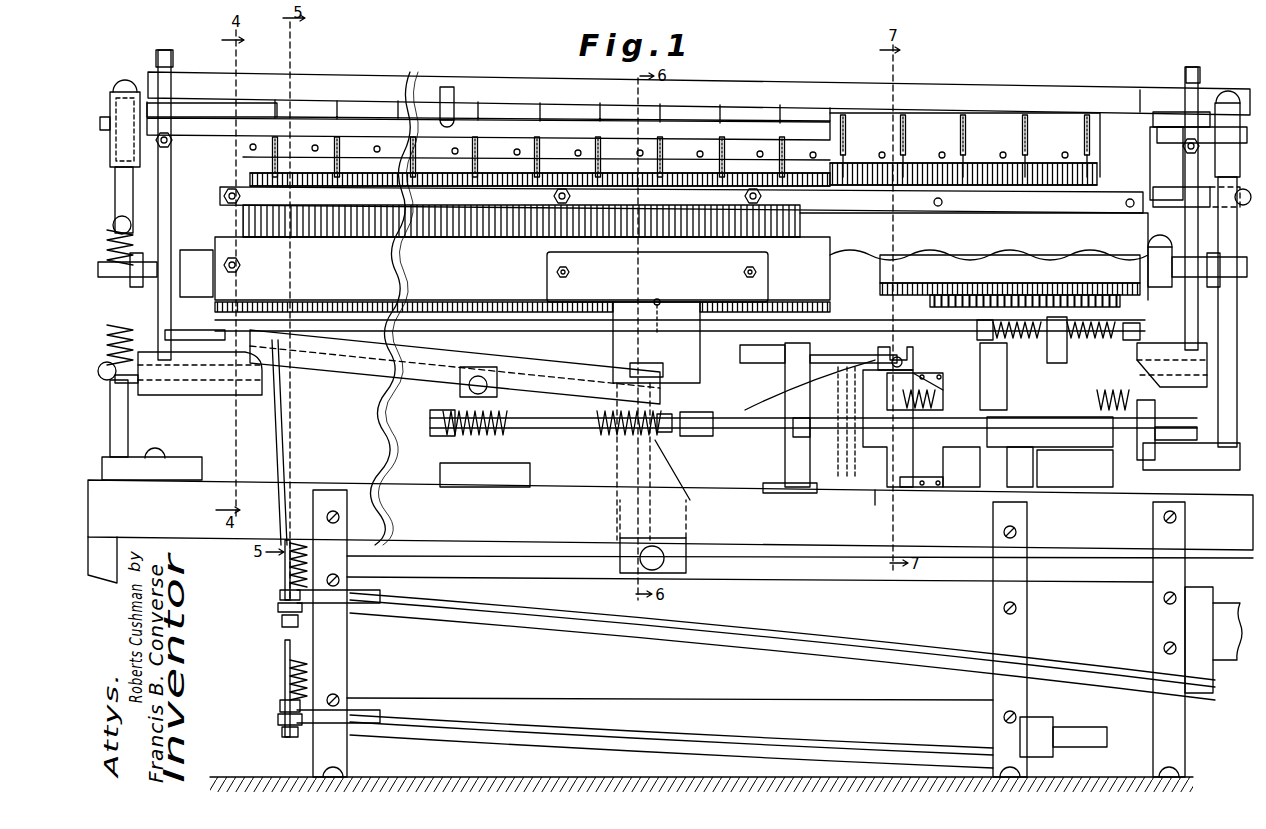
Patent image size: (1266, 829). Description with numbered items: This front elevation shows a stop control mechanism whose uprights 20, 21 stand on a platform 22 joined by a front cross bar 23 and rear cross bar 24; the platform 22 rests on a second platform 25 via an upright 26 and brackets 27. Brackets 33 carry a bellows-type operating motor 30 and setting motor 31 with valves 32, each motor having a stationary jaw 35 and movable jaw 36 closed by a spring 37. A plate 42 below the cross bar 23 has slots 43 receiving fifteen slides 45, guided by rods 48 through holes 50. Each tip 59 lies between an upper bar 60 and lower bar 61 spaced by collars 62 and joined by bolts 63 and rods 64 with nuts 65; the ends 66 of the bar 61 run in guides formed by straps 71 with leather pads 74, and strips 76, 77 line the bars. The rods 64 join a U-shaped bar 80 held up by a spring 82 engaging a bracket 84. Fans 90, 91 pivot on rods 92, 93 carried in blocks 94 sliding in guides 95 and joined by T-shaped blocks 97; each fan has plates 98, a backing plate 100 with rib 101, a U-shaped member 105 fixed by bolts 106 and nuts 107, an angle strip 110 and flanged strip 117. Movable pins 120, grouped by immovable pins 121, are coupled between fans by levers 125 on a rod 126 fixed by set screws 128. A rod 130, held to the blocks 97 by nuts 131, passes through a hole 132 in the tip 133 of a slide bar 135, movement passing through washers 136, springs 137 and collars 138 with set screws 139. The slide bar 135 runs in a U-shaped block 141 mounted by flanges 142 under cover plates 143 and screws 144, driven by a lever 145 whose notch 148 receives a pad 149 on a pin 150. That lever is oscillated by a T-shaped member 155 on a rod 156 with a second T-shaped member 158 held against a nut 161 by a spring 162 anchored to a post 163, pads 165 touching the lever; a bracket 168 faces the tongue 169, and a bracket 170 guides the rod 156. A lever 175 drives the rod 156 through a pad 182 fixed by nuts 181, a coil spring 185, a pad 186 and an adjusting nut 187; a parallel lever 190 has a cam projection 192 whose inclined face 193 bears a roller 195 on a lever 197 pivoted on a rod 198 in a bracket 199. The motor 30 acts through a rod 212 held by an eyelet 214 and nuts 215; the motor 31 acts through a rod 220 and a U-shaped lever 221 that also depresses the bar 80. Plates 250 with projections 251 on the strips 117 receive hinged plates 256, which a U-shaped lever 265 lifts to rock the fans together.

The base 20 is at (128, 440).
The bracket 21 is at (1212, 358).
The frame member 22 is at (871, 506).
The top bar end 23 is at (1120, 95).
The cross block 24 is at (1196, 202).
The floor 25 is at (1060, 777).
The bracket 26 is at (136, 560).
The post 27 is at (1030, 572).
The frame 30 is at (670, 571).
The frame bar 31 is at (822, 723).
The block 32 is at (1035, 715).
The standard 33 is at (345, 553).
The rail 35 is at (782, 674).
The rail strip 36 is at (750, 645).
The spring rod 37 is at (285, 552).
The comb plate 42 is at (1095, 160).
The plate 43 is at (970, 140).
The pin 45 is at (848, 120).
The hole 48 is at (256, 144).
The comb 50 is at (372, 145).
The slide 59 is at (490, 108).
The top bar 60 is at (699, 93).
The rail 61 is at (665, 128).
The bar 62 is at (200, 110).
The bolt 63 is at (450, 85).
The side plate 64 is at (243, 160).
The nut 65 is at (175, 55).
The bolt 66 is at (162, 50).
The post 71 is at (127, 92).
The post rod 74 is at (108, 117).
The divider 76 is at (320, 105).
The pin 77 is at (278, 135).
The bracket 80 is at (672, 373).
The stud 82 is at (176, 382).
The knob 84 is at (128, 390).
The plate 90 is at (522, 268).
The plate 91 is at (1010, 285).
The arm 92 is at (192, 216).
The collar 93 is at (118, 220).
The block 94 is at (125, 245).
The spring 95 is at (667, 297).
The block 97 is at (1180, 257).
The block 98 is at (213, 288).
The bar 100 is at (681, 200).
The plate 101 is at (974, 256).
The nut 105 is at (351, 193).
The nut 106 is at (572, 196).
The nut 107 is at (744, 196).
The plate 110 is at (982, 269).
The comb 117 is at (522, 294).
The comb teeth 120 is at (942, 152).
The plate 121 is at (243, 190).
The rod 125 is at (965, 318).
The rod 126 is at (865, 315).
The collar 128 is at (1155, 252).
The rail 130 is at (680, 330).
The block 131 is at (677, 355).
The arm 132 is at (1078, 367).
The arm 133 is at (1075, 340).
The block 135 is at (910, 416).
The bracket 136 is at (1090, 295).
The spring 137 is at (1061, 347).
The block 138 is at (935, 385).
The block 139 is at (1135, 365).
The arm 141 is at (900, 385).
The foot 142 is at (1008, 505).
The block 143 is at (762, 356).
The post 144 is at (781, 410).
The bar 145 is at (853, 411).
The post 148 is at (918, 338).
The post 149 is at (881, 349).
The spring 150 is at (945, 398).
The housing 155 is at (920, 490).
The nut 156 is at (774, 433).
The shaft 158 is at (1050, 430).
The rod 161 is at (1160, 440).
The spring 162 is at (1084, 399).
The post 163 is at (1155, 418).
The base 165 is at (516, 475).
The block 168 is at (1100, 490).
The block 169 is at (1075, 487).
The block 170 is at (858, 487).
The lever 175 is at (660, 468).
The nut 181 is at (717, 436).
The nut 182 is at (736, 465).
The nut 185 is at (600, 440).
The spring 186 is at (630, 435).
The nut 187 is at (440, 436).
The roller 190 is at (720, 480).
The block 192 is at (713, 370).
The arm 193 is at (762, 372).
The arm 195 is at (757, 399).
The shaft 197 is at (540, 428).
The pivot block 198 is at (480, 378).
The spring 199 is at (498, 433).
The rods 212 is at (300, 418).
The nut 214 is at (280, 607).
The nut 215 is at (283, 592).
The spring 220 is at (287, 670).
The lever 221 is at (455, 367).
The plate 250 is at (657, 277).
The pin 251 is at (645, 310).
The block 256 is at (656, 421).
The lever 265 is at (568, 370).